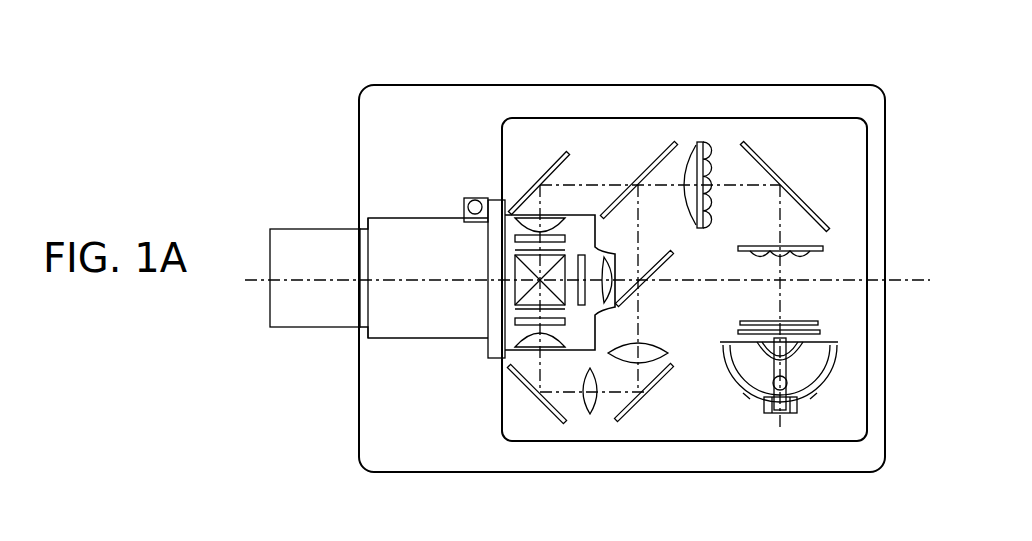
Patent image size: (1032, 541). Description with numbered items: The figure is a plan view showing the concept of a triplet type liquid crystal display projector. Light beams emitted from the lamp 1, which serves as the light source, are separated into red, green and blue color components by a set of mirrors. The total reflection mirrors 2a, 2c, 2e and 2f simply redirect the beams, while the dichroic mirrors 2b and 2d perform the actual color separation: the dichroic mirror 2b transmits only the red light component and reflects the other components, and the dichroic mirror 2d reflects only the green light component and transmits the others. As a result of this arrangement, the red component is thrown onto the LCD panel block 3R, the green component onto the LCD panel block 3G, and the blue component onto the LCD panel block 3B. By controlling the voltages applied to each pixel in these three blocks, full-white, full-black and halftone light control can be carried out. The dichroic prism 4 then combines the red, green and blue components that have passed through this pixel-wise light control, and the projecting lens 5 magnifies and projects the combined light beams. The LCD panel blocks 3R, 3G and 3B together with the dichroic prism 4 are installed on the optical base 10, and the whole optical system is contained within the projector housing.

The lamp 1 is at (802, 370).
The total reflection mirror 2a is at (806, 200).
The dichroic mirror 2b is at (675, 145).
The total reflection mirror 2c is at (555, 153).
The dichroic mirror 2d is at (668, 265).
The total reflection mirror 2e is at (630, 412).
The total reflection mirror 2f is at (548, 415).
The LCD panel block 3B is at (525, 217).
The LCD panel block 3G is at (579, 255).
The LCD panel block 3R is at (562, 320).
The dichroic prism 4 is at (518, 273).
The projecting lens 5 is at (396, 328).
The optical base 10 is at (582, 340).